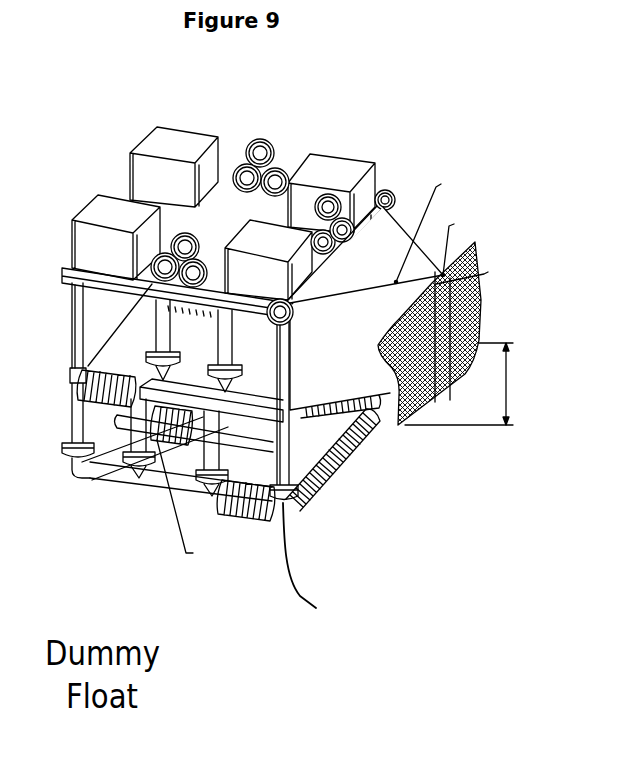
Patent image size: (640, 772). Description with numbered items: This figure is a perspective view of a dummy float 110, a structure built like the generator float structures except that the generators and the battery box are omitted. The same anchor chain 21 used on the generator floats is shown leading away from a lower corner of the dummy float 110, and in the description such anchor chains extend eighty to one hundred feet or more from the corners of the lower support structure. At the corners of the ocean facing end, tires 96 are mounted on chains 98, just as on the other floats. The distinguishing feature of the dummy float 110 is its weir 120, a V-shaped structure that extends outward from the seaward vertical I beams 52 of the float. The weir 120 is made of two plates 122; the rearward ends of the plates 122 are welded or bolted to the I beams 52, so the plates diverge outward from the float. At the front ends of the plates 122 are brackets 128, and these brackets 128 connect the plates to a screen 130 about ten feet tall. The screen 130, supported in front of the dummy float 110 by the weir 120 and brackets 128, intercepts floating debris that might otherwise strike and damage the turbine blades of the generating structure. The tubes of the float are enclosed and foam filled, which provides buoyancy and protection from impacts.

The dummy float 110 is at (373, 145).
The seaward vertical I beam 52 is at (200, 395).
The tire 96 is at (380, 213).
The chain 98 is at (384, 190).
The plate 122 is at (424, 293).
The weir 120 is at (490, 328).
The bracket 128 is at (516, 333).
The screen 130 is at (485, 393).
The anchor chain 21 is at (315, 607).